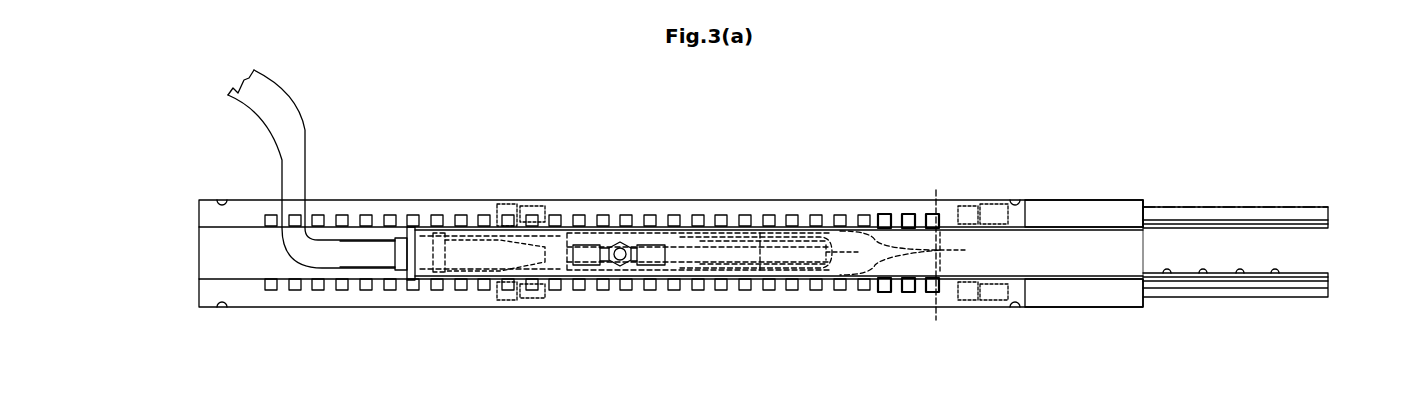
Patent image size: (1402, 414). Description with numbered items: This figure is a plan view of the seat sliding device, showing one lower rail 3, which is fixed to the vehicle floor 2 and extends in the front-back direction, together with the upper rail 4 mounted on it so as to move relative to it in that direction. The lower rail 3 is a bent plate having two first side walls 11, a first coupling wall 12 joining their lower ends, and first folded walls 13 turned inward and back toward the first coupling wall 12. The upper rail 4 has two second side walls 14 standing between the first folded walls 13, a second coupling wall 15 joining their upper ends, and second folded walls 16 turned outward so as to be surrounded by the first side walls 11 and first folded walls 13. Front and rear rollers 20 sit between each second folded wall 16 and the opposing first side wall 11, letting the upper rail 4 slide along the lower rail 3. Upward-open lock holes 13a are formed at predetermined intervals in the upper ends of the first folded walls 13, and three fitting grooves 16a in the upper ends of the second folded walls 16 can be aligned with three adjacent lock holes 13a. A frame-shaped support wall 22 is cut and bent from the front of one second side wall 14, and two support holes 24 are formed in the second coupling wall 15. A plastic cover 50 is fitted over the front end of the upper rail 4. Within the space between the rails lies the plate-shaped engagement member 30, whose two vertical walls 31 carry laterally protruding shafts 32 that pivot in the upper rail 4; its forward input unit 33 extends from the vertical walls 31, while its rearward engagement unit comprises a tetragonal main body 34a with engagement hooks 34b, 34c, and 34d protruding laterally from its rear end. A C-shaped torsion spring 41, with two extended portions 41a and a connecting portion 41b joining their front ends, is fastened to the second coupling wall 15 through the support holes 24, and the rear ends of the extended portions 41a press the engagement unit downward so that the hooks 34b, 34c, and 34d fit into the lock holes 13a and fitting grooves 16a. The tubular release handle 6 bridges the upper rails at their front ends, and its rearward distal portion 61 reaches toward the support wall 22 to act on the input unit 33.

The vehicle floor 2 is at (933, 160).
The lower rail 3 is at (1120, 200).
The upper rail 4 is at (1208, 208).
The release handle 6 is at (306, 118).
The first side wall 11 is at (262, 280).
The first coupling wall 12 is at (1085, 220).
The first folded wall 13 is at (1048, 212).
The lock hole 13a is at (393, 218).
The second side wall 14 is at (1165, 220).
The second coupling wall 15 is at (1298, 285).
The second folded wall 16 is at (1248, 207).
The fitting groove 16a is at (912, 214).
The roller 20 is at (520, 204).
The support wall 22 is at (442, 293).
The support hole 24 is at (644, 268).
The engagement member 30 is at (772, 278).
The vertical wall 31 is at (730, 233).
The shaft 32 is at (720, 232).
The input unit 33 is at (476, 293).
The main body 34a is at (950, 250).
The engagement hook 34b is at (933, 293).
The engagement hook 34c is at (910, 293).
The engagement hook 34d is at (884, 293).
The torsion spring 41 is at (652, 245).
The extended portion 41a is at (805, 235).
The connecting portion 41b is at (449, 232).
The cover 50 is at (410, 227).
The distal portion 61 is at (388, 275).